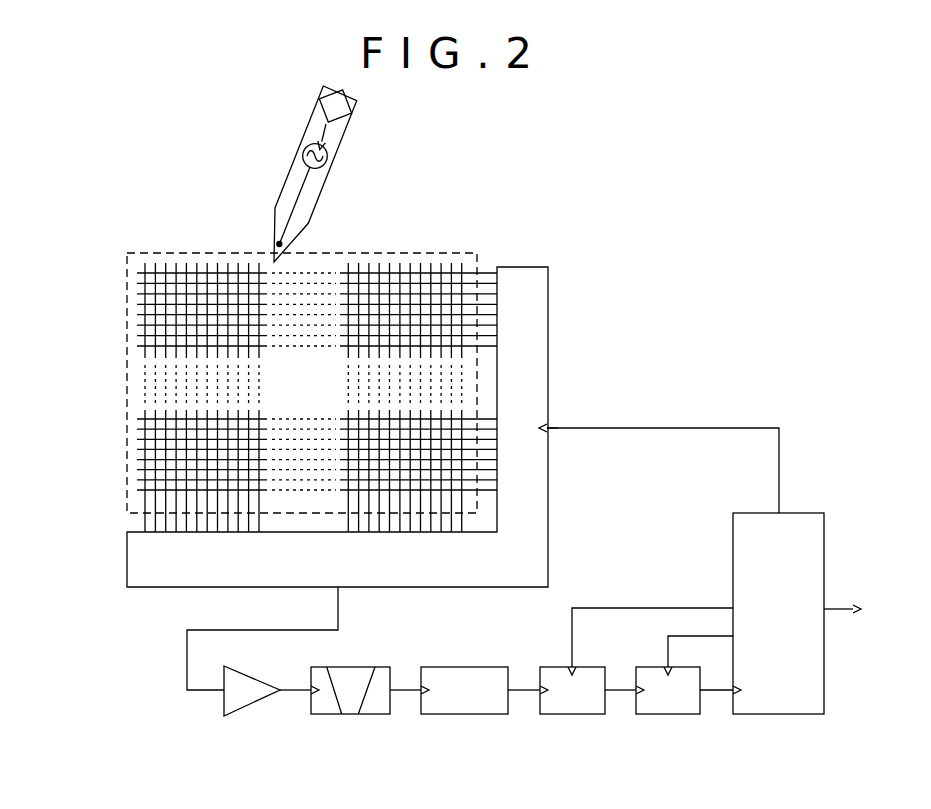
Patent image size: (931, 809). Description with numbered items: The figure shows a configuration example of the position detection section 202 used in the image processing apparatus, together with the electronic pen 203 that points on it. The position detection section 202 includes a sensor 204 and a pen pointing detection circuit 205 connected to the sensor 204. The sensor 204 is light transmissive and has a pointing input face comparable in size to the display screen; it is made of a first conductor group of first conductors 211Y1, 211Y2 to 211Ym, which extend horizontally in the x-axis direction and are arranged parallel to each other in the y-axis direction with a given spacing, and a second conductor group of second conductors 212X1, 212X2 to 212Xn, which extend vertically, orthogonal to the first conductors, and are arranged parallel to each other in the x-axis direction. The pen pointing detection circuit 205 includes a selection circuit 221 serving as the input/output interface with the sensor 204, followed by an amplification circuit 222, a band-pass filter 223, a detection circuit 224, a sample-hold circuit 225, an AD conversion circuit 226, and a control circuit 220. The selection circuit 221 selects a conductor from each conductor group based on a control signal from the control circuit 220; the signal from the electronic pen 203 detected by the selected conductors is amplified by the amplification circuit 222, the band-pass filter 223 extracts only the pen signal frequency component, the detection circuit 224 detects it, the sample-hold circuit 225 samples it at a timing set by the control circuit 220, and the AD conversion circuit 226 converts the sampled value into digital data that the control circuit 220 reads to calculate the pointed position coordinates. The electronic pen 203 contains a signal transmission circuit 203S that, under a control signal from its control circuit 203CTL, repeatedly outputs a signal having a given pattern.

The position detection section 202 is at (650, 275).
The electronic pen 203 is at (292, 177).
The control circuit 203CTL is at (348, 113).
The signal transmission circuit 203S is at (328, 152).
The sensor 204 is at (362, 252).
The pen pointing detection circuit 205 is at (612, 486).
The first conductor 211Y1 is at (140, 491).
The first conductor 211Y2 is at (140, 481).
The first conductor 211Ym is at (140, 275).
The second conductor 212X1 is at (144, 266).
The second conductor 212X2 is at (157, 263).
The second conductor 212Xn is at (462, 268).
The control circuit 220 is at (782, 715).
The selection circuit 221 is at (530, 267).
The amplification circuit 222 is at (252, 707).
The band-pass filter 223 is at (332, 715).
The detection circuit 224 is at (467, 715).
The sample-hold circuit 225 is at (573, 715).
The AD conversion circuit 226 is at (668, 715).